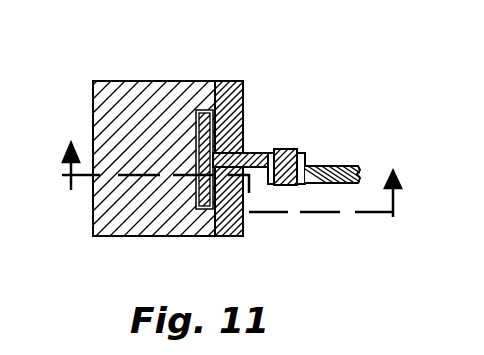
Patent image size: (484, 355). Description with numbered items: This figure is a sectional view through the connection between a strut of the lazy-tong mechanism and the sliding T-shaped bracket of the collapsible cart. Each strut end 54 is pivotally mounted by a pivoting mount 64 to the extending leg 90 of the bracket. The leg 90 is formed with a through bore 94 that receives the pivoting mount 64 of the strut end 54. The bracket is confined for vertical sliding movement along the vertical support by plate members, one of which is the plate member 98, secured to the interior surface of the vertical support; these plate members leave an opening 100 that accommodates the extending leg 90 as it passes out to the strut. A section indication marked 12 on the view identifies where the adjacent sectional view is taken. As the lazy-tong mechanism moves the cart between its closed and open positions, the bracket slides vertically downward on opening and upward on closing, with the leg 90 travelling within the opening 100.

The section line 12- 12 is at (236, 160).
The strut end 54 is at (331, 165).
The pivoting mount 64 is at (284, 148).
The extending leg 90 is at (247, 151).
The through bore 94 is at (245, 81).
The plate member 98 is at (243, 222).
The opening 100 is at (246, 169).